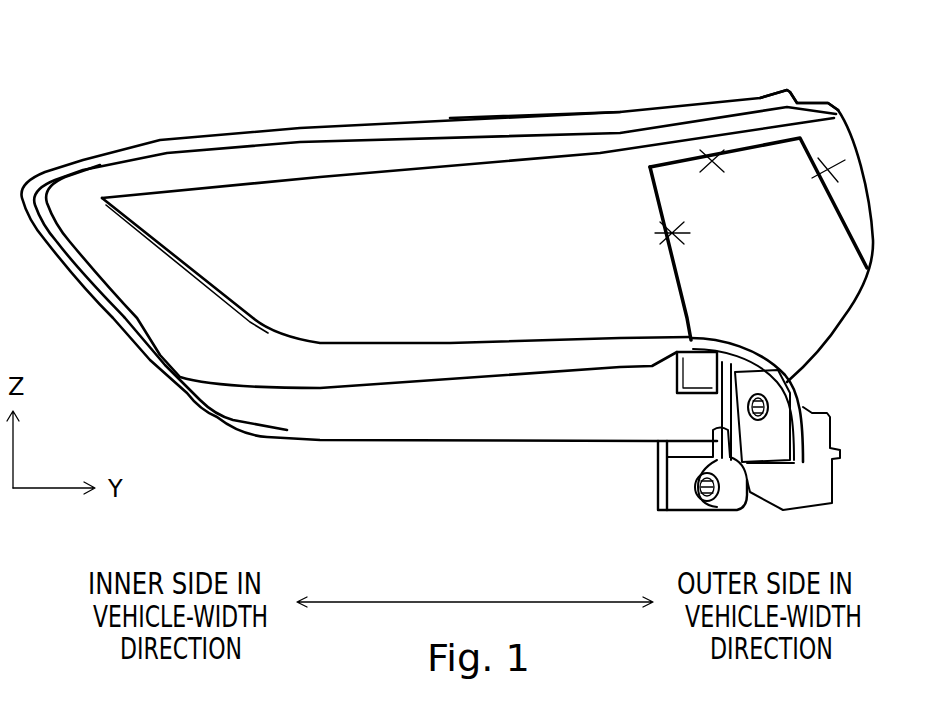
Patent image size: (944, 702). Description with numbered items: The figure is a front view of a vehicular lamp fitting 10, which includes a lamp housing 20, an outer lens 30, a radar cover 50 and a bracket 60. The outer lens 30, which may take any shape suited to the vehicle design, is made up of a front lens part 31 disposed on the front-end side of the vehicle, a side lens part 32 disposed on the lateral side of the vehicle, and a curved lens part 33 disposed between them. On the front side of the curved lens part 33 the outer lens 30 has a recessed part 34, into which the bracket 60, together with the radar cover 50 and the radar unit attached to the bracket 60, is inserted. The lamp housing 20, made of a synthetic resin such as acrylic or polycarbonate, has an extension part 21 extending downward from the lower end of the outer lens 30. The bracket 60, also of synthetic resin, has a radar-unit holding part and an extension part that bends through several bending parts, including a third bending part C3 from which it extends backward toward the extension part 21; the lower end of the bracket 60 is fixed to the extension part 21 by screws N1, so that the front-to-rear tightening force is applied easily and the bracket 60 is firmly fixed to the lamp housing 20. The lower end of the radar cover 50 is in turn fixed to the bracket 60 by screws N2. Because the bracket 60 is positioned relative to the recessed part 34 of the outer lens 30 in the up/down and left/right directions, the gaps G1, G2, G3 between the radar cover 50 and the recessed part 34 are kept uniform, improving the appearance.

The vehicular lamp fitting 10 is at (536, 88).
The lamp housing 20 is at (392, 124).
The extension part 21 is at (653, 480).
The outer lens 30 is at (267, 228).
The front lens part 31 is at (333, 228).
The side lens part 32 is at (857, 200).
The curved lens part 33 is at (745, 148).
The recessed part 34 is at (690, 256).
The radar cover 50 is at (833, 320).
The bracket 60 is at (663, 505).
The screws N1 is at (716, 501).
The screws N2 is at (778, 406).
The third bending part C3 is at (748, 492).
The gap G1 is at (682, 234).
The gap G2 is at (826, 172).
The gap G3 is at (713, 170).